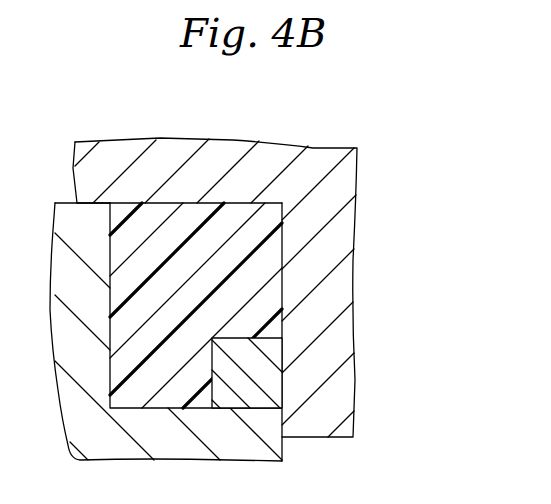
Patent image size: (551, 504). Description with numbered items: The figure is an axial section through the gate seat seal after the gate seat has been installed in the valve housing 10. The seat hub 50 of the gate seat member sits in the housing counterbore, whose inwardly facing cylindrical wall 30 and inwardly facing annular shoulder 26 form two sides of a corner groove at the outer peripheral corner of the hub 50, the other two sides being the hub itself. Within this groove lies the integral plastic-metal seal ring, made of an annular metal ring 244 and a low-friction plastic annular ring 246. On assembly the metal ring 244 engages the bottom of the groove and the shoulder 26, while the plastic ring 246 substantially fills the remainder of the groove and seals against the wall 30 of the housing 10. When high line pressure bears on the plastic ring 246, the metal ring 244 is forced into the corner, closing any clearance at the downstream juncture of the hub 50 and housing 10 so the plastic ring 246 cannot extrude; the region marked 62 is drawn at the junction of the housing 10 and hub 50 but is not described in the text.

The valve housing 10 is at (158, 150).
The annular shoulder 26 is at (283, 257).
The cylindrical wall 30 is at (194, 204).
The seat hub 50 is at (63, 395).
The gap 62 is at (97, 203).
The metal ring 244 is at (268, 367).
The plastic annular ring 246 is at (265, 218).